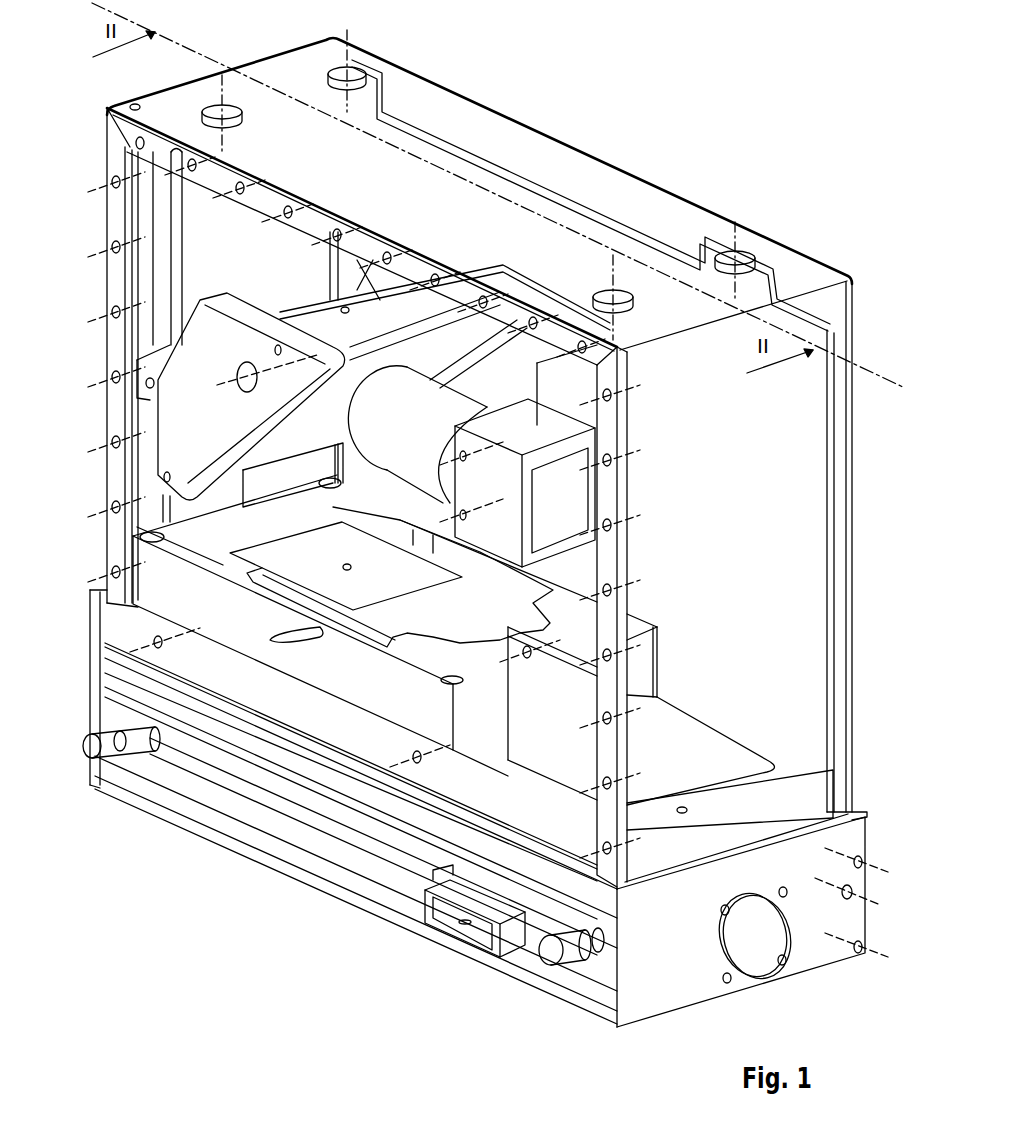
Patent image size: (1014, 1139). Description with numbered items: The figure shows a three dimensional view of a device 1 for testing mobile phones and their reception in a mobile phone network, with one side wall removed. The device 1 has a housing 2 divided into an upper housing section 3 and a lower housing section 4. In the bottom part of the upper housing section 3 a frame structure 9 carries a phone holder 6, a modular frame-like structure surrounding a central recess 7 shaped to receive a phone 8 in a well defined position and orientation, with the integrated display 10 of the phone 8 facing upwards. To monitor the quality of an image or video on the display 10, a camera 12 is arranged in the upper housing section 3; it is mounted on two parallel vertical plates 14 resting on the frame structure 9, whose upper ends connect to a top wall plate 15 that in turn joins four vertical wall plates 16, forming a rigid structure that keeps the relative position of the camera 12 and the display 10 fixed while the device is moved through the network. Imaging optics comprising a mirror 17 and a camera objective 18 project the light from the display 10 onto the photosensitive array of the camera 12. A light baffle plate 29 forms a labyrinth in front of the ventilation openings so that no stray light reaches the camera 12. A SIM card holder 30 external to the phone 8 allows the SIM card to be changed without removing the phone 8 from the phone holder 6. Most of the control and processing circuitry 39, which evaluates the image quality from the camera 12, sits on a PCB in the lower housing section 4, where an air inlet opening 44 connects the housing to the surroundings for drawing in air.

The device 1 is at (585, 120).
The housing 2 is at (472, 97).
The upper housing section 3 is at (180, 214).
The lower housing section 4 is at (145, 773).
The phone holder 6 is at (140, 600).
The recess 7 is at (133, 537).
The phone 8 is at (195, 552).
The frame structure 9 is at (240, 693).
The display 10 is at (252, 555).
The camera 12 is at (525, 425).
The vertical plates 14 is at (835, 603).
The top wall plate 15 is at (640, 193).
The vertical wall plates 16 is at (840, 515).
The mirror 17 is at (370, 340).
The camera objective 18 is at (433, 392).
The light baffle plate 29 is at (115, 248).
The SIM card holder 30 is at (535, 758).
The control and processing circuitry 39 is at (258, 803).
The air inlet opening 44 is at (762, 957).